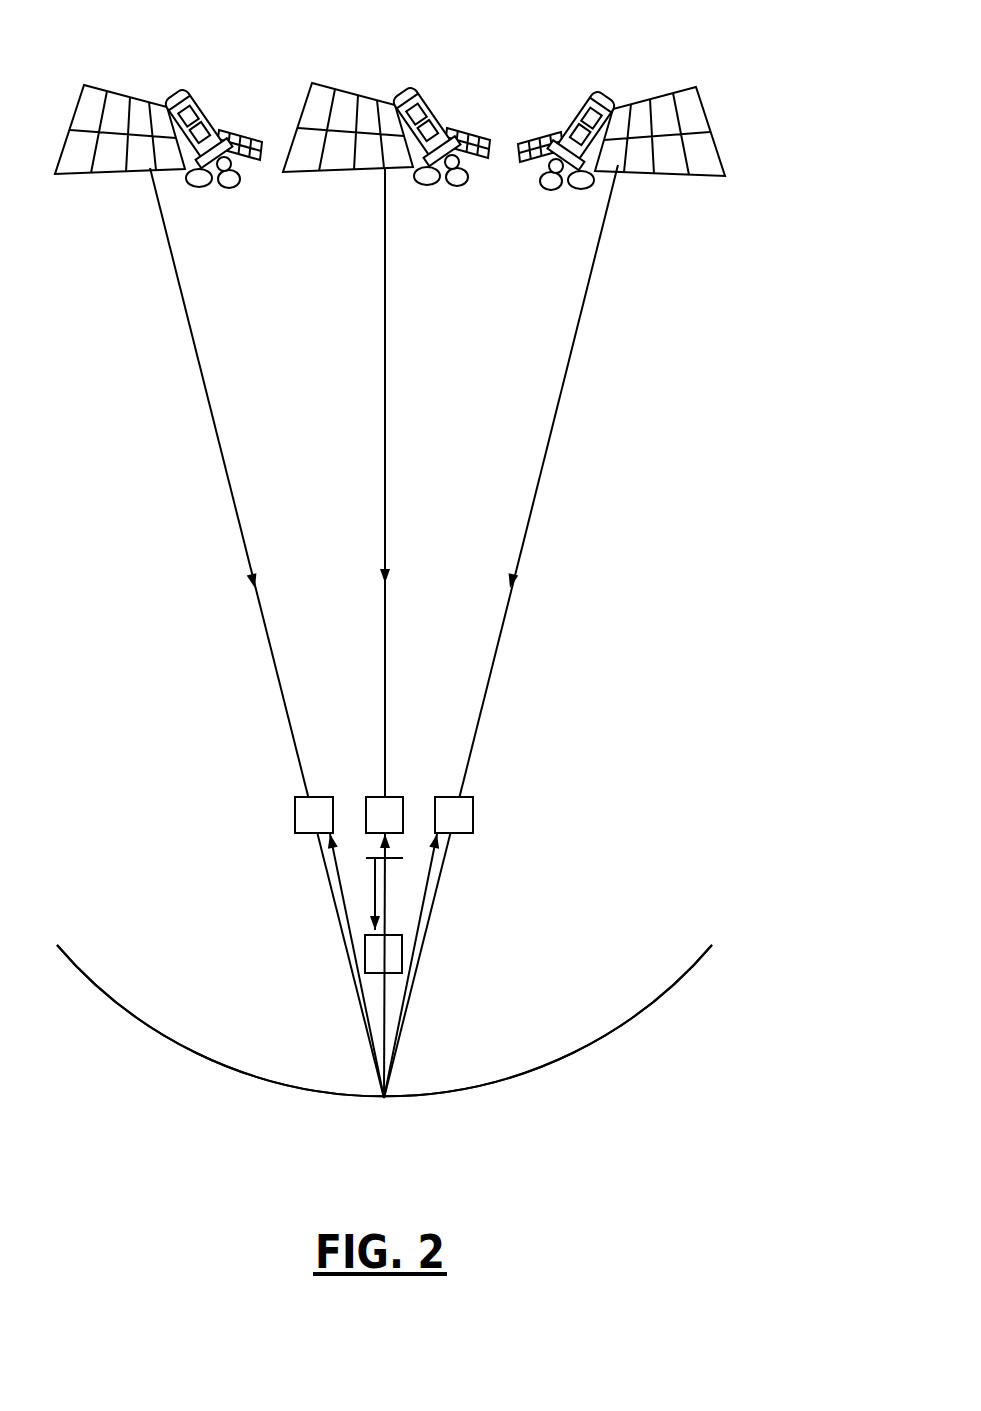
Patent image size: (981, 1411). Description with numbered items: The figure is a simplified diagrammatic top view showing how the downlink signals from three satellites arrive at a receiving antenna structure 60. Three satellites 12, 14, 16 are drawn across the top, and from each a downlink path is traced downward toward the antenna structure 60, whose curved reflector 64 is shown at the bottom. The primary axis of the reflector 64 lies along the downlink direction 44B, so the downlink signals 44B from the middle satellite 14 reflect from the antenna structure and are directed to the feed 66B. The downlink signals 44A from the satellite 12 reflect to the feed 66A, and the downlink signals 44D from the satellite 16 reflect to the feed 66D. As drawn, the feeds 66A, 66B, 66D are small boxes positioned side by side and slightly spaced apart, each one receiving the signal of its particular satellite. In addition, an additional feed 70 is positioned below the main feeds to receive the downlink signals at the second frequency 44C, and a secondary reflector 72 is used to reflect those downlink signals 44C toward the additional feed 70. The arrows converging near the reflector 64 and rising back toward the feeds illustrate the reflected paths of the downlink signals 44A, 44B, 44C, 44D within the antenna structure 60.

The satellite 12 is at (133, 98).
The satellite 14 is at (365, 98).
The satellite 16 is at (645, 98).
The downlink signals 44A is at (201, 375).
The downlink signals 44B is at (383, 310).
The downlink signals at the second frequency 44C is at (383, 375).
The downlink signals 44D is at (562, 377).
The receiving antenna structure 60 is at (724, 932).
The reflector 64 is at (617, 1030).
The feed 66A is at (471, 797).
The feed 66B is at (399, 797).
The feed 66D is at (313, 797).
The additional feed 70 is at (364, 957).
The secondary reflector 72 is at (400, 858).